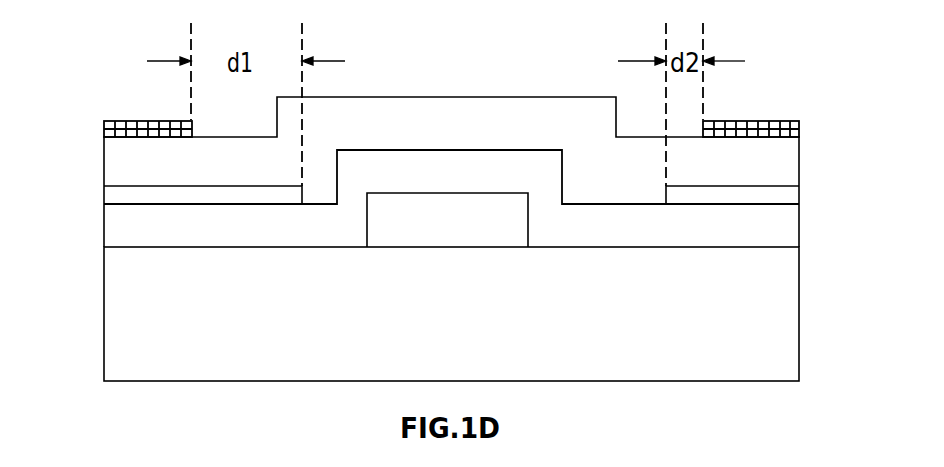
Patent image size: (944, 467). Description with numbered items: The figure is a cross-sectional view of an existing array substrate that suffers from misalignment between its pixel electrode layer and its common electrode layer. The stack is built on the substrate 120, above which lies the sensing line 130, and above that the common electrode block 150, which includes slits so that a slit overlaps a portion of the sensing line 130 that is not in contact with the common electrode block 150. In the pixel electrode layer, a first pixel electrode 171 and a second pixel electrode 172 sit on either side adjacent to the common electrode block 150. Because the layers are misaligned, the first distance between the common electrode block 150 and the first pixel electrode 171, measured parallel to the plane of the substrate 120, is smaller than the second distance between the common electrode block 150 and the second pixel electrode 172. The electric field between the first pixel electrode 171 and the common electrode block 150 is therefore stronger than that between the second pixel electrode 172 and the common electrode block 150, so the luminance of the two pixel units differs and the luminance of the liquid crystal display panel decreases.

The substrate 120 is at (750, 370).
The sensing line 130 is at (438, 225).
The common electrode block 150 is at (162, 197).
The first pixel electrode 171 is at (162, 133).
The second pixel electrode 172 is at (767, 133).